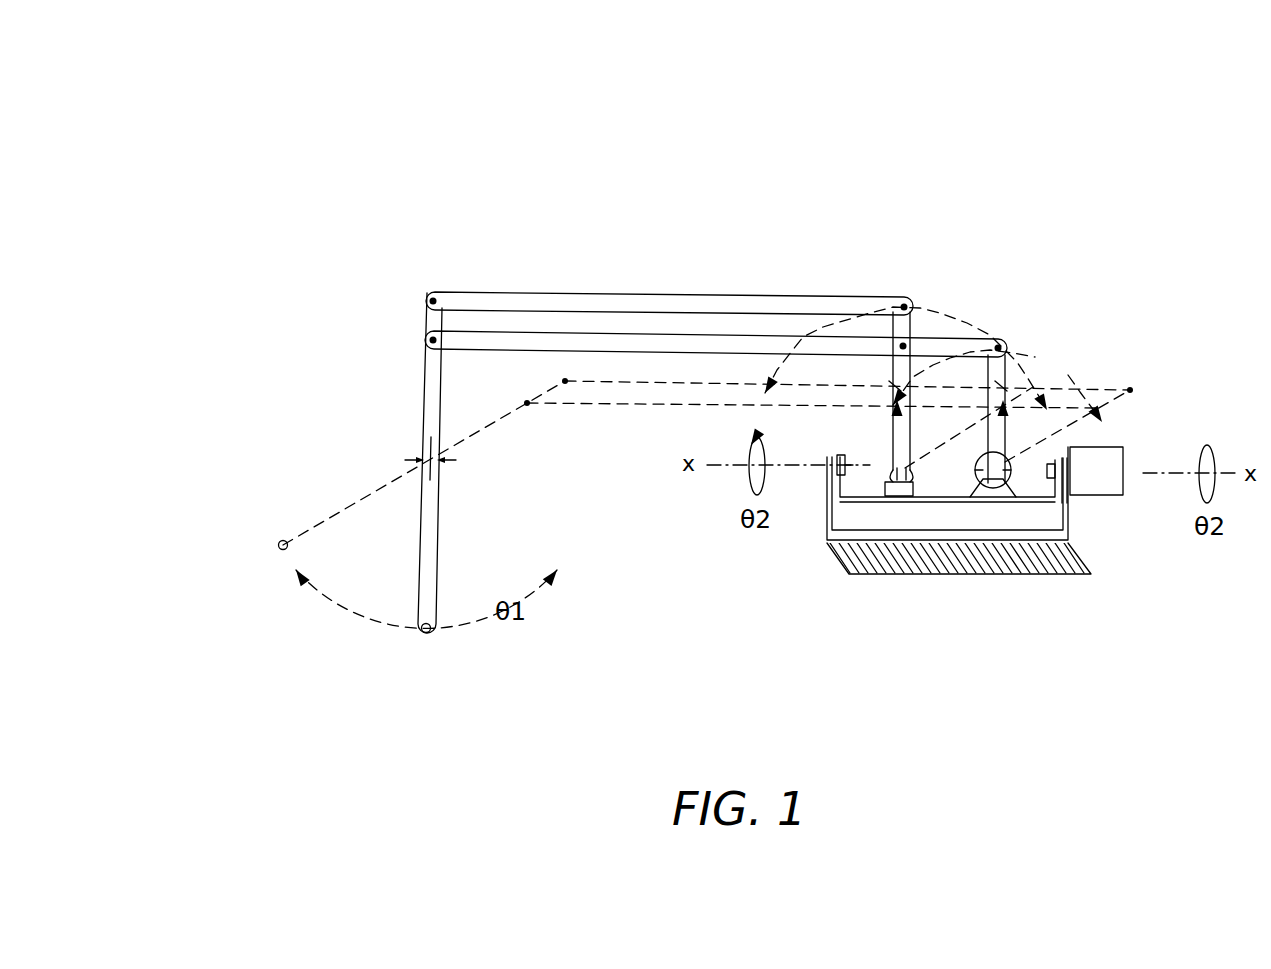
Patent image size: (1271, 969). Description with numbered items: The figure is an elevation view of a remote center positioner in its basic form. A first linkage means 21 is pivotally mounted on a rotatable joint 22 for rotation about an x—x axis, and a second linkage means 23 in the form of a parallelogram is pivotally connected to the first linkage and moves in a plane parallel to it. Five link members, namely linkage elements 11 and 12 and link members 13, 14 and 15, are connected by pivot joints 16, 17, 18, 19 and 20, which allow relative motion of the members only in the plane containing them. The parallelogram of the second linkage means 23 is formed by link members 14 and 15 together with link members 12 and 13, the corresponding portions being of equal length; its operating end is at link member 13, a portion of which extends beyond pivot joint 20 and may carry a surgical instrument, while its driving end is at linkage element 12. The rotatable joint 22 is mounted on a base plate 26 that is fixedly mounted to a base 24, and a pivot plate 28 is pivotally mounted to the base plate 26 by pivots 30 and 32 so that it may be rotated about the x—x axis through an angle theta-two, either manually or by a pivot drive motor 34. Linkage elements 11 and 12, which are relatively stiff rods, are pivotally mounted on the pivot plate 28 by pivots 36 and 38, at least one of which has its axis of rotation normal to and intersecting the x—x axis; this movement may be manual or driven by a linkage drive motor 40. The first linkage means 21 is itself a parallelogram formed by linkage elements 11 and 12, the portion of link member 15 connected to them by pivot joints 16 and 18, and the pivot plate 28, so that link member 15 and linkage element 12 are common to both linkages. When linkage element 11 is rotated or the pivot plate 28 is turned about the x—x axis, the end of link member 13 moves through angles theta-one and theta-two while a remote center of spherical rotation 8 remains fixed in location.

The remote center of spherical rotation 8 is at (422, 455).
The linkage element 11 is at (1010, 344).
The linkage element 12 is at (914, 320).
The link member 13 is at (420, 393).
The link member 14 is at (563, 293).
The link member 15 is at (678, 337).
The pivot joint 16 is at (1003, 346).
The pivot joint 17 is at (907, 303).
The pivot joint 18 is at (913, 338).
The pivot joint 19 is at (428, 295).
The pivot joint 20 is at (428, 335).
The first linkage means 21 is at (1090, 362).
The rotatable joint 22 is at (810, 514).
The second linkage means 23 is at (773, 237).
The base 24 is at (847, 568).
The base plate 26 is at (823, 527).
The pivot plate 28 is at (923, 500).
The pivot 30 is at (1070, 503).
The pivot 32 is at (837, 455).
The pivot drive motor 34 is at (1123, 447).
The pivot 36 is at (898, 482).
The pivot 38 is at (1010, 497).
The linkage drive motor 40 is at (985, 497).